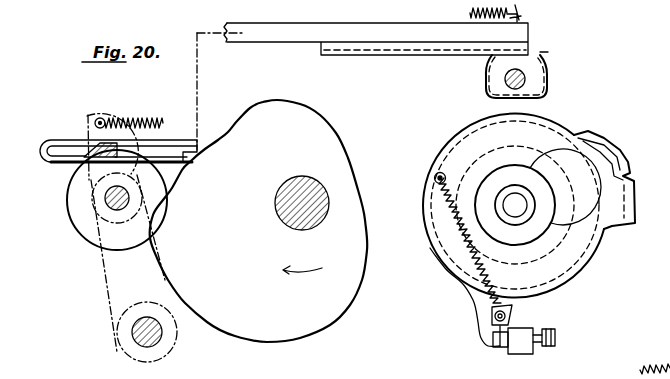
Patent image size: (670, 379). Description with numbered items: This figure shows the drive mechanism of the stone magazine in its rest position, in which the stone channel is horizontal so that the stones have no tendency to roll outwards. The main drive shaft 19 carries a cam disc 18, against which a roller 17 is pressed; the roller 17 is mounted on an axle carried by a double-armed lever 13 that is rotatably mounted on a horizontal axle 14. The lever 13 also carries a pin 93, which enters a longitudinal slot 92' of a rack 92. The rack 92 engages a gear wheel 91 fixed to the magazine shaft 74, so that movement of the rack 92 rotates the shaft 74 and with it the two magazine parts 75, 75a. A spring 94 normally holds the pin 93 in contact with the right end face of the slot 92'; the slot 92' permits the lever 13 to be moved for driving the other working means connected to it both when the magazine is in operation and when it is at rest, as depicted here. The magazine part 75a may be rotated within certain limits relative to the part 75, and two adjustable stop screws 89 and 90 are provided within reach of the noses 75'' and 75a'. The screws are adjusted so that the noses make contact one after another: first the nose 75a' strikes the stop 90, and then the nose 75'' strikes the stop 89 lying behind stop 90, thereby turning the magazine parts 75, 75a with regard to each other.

The longitudinal slot 92' is at (118, 131).
The pin 93 is at (97, 142).
The spring 94 is at (131, 119).
The roller 17 is at (76, 229).
The double-armed lever 13 is at (106, 277).
The horizontal axle 14 is at (133, 339).
The cam disc 18 is at (320, 114).
The main drive shaft 19 is at (289, 213).
The rack 92 is at (388, 86).
The gear wheel 91 is at (548, 80).
The magazine shaft 74 is at (505, 80).
The magazine part 75 is at (513, 206).
The magazine part 75a is at (446, 260).
The nose 75a' is at (465, 330).
The nose 75'' is at (494, 336).
The stop screw 89 is at (553, 326).
The stop screw 90 is at (545, 343).